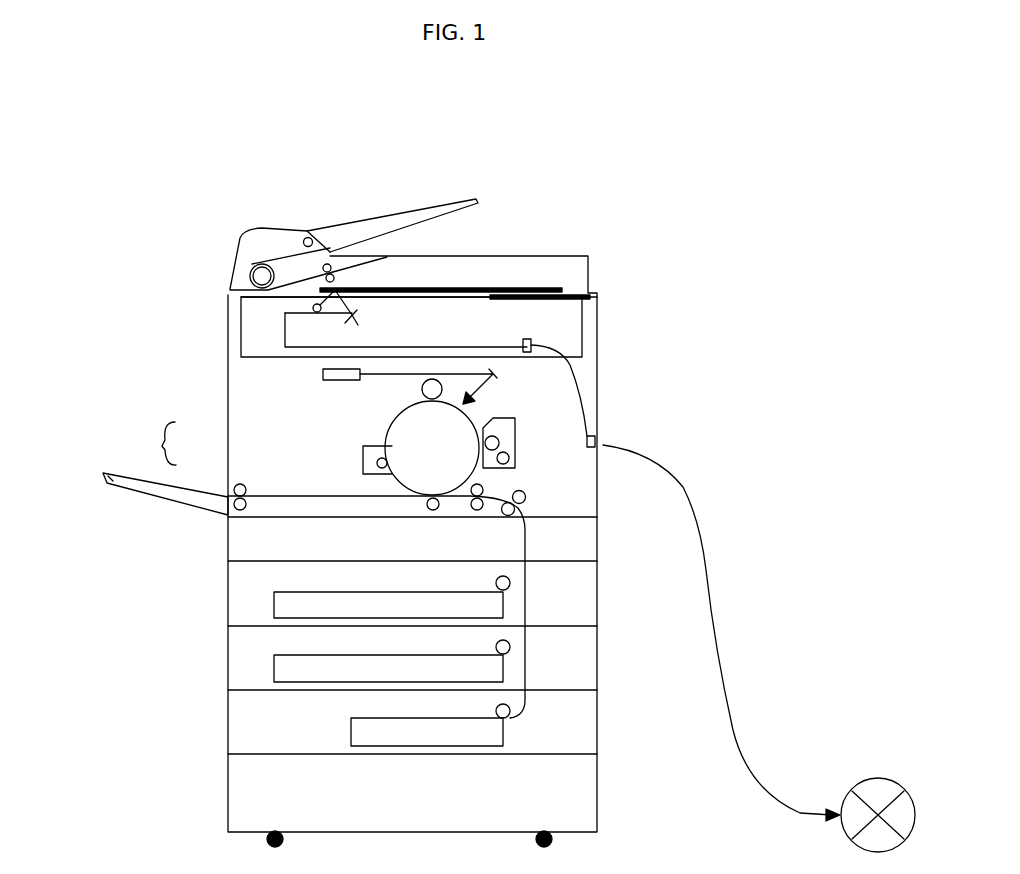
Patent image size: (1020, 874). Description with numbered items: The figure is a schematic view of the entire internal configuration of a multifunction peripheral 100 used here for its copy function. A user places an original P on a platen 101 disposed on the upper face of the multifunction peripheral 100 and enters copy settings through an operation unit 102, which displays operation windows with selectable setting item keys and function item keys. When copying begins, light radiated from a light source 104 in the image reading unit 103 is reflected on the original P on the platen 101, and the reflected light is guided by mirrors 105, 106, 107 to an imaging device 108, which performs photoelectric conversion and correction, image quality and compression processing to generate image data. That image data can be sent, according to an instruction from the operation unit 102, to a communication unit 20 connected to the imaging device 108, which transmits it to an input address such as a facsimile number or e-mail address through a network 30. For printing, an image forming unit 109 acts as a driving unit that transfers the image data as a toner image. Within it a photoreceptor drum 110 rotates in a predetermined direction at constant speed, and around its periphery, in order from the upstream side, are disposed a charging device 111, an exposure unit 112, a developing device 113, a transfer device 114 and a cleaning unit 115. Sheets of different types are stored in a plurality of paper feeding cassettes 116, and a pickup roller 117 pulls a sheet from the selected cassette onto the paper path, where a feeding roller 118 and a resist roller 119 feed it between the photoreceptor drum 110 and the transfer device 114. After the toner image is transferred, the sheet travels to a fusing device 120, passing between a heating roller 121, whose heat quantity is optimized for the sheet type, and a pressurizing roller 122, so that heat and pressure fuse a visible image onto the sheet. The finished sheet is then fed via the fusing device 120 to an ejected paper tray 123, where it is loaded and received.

The multifunction peripheral 100 is at (430, 200).
The original P is at (545, 290).
The platen 101 is at (568, 293).
The operation unit 102 is at (598, 297).
The image reading unit 103 is at (570, 324).
The light source 104 is at (313, 307).
The mirror 105 is at (356, 322).
The mirror 106 is at (291, 310).
The mirror 107 is at (291, 354).
The imaging device 108 is at (523, 343).
The image forming unit 109 is at (625, 395).
The photoreceptor drum 110 is at (408, 420).
The charging device 111 is at (421, 388).
The exposure unit 112 is at (323, 375).
The developing device 113 is at (499, 424).
The transfer device 114 is at (433, 510).
The cleaning unit 115 is at (363, 450).
The paper feeding cassette 116 is at (274, 614).
The pickup roller 117 is at (511, 583).
The feeding roller 118 is at (519, 491).
The resist roller 119 is at (478, 510).
The fusing device 120 is at (146, 435).
The heating roller 121 is at (236, 487).
The pressurizing roller 122 is at (235, 500).
The ejected paper tray 123 is at (110, 478).
The communication unit 20 is at (606, 442).
The network 30 is at (853, 790).